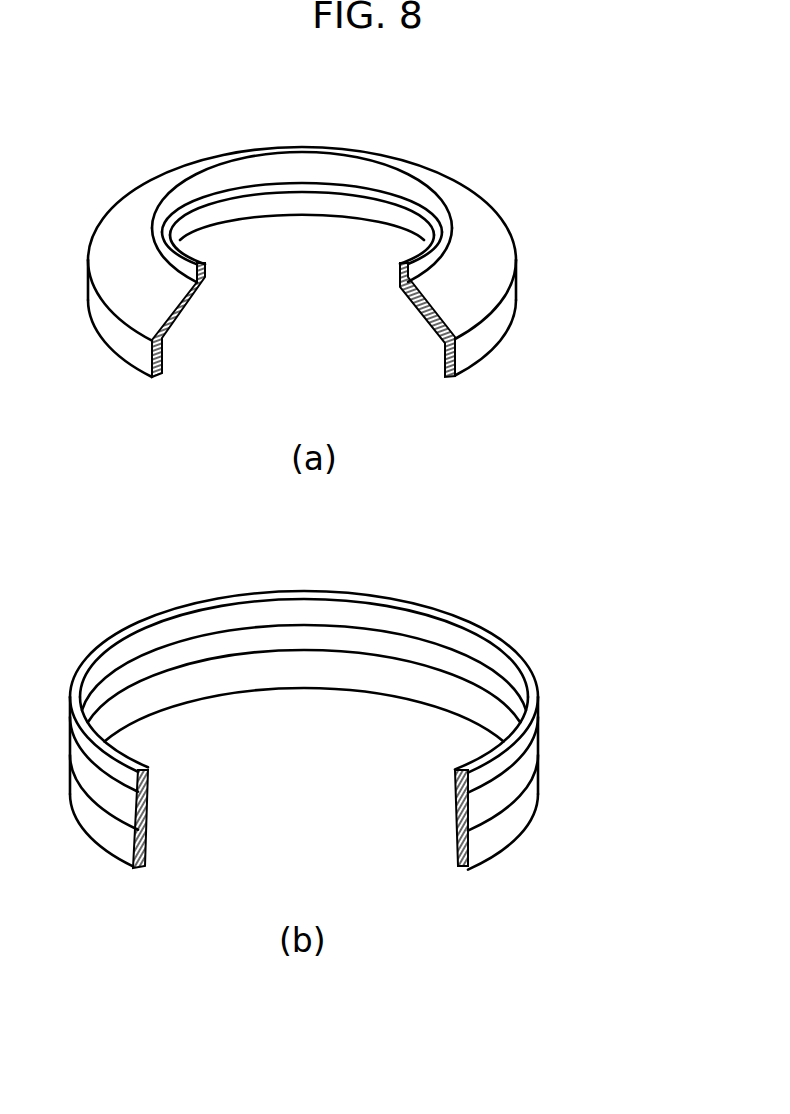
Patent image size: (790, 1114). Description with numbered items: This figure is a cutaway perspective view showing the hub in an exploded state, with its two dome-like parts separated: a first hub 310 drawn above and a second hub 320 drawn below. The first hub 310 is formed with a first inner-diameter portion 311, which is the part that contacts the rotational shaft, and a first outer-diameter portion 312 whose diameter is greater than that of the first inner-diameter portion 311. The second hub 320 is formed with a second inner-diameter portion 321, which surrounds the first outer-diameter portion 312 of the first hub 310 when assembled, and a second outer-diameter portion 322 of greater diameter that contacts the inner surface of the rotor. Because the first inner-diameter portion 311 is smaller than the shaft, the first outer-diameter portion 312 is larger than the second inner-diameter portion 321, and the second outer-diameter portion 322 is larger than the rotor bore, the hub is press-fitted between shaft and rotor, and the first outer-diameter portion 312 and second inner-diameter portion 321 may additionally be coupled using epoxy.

The first hub 310 is at (478, 271).
The first inner-diameter portion 311 is at (401, 284).
The first outer-diameter portion 312 is at (444, 366).
The second hub 320 is at (510, 781).
The second inner-diameter portion 321 is at (456, 782).
The second outer-diameter portion 322 is at (459, 843).